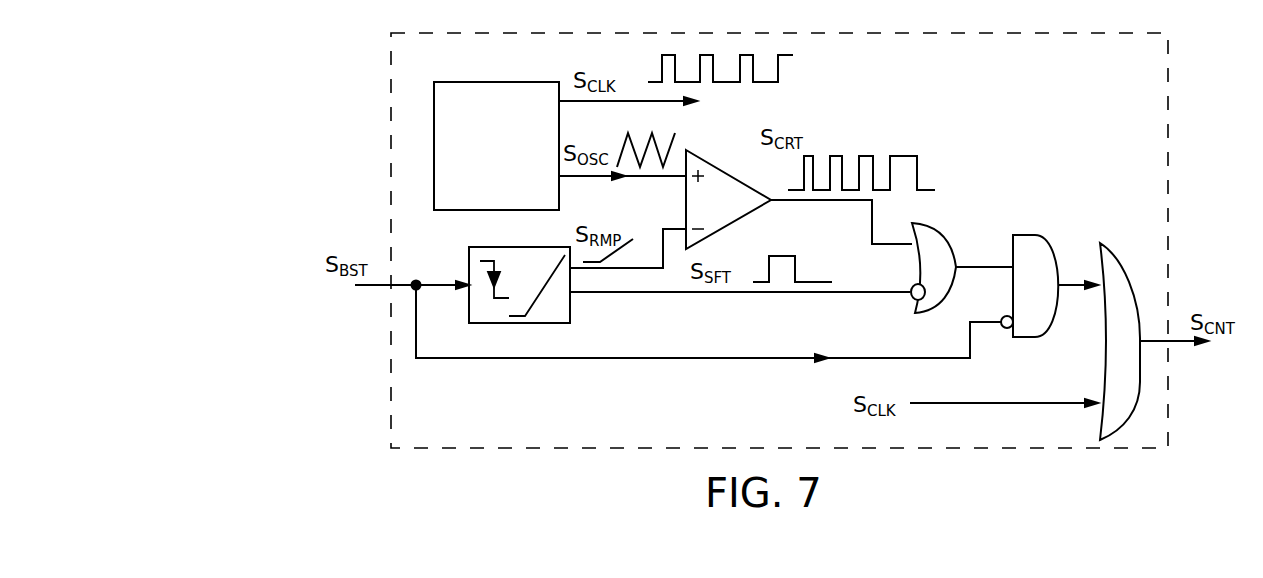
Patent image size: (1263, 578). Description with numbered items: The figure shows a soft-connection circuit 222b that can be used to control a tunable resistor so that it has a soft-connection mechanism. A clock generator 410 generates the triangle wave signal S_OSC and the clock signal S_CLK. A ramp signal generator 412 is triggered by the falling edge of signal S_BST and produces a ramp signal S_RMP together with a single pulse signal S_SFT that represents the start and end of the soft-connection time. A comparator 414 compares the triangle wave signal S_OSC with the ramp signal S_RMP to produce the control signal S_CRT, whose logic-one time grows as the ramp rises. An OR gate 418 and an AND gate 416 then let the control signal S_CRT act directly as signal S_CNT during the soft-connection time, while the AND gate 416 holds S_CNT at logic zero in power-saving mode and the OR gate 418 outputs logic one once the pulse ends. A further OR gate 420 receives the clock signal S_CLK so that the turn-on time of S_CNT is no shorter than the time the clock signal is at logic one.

The soft-connection circuit 222b is at (440, 33).
The clock generator 410 is at (487, 82).
The ramp signal generator 412 is at (469, 253).
The comparator 414 is at (712, 164).
The AND gate 416 is at (1028, 235).
The OR gate 418 is at (932, 228).
The OR gate 420 is at (1102, 243).